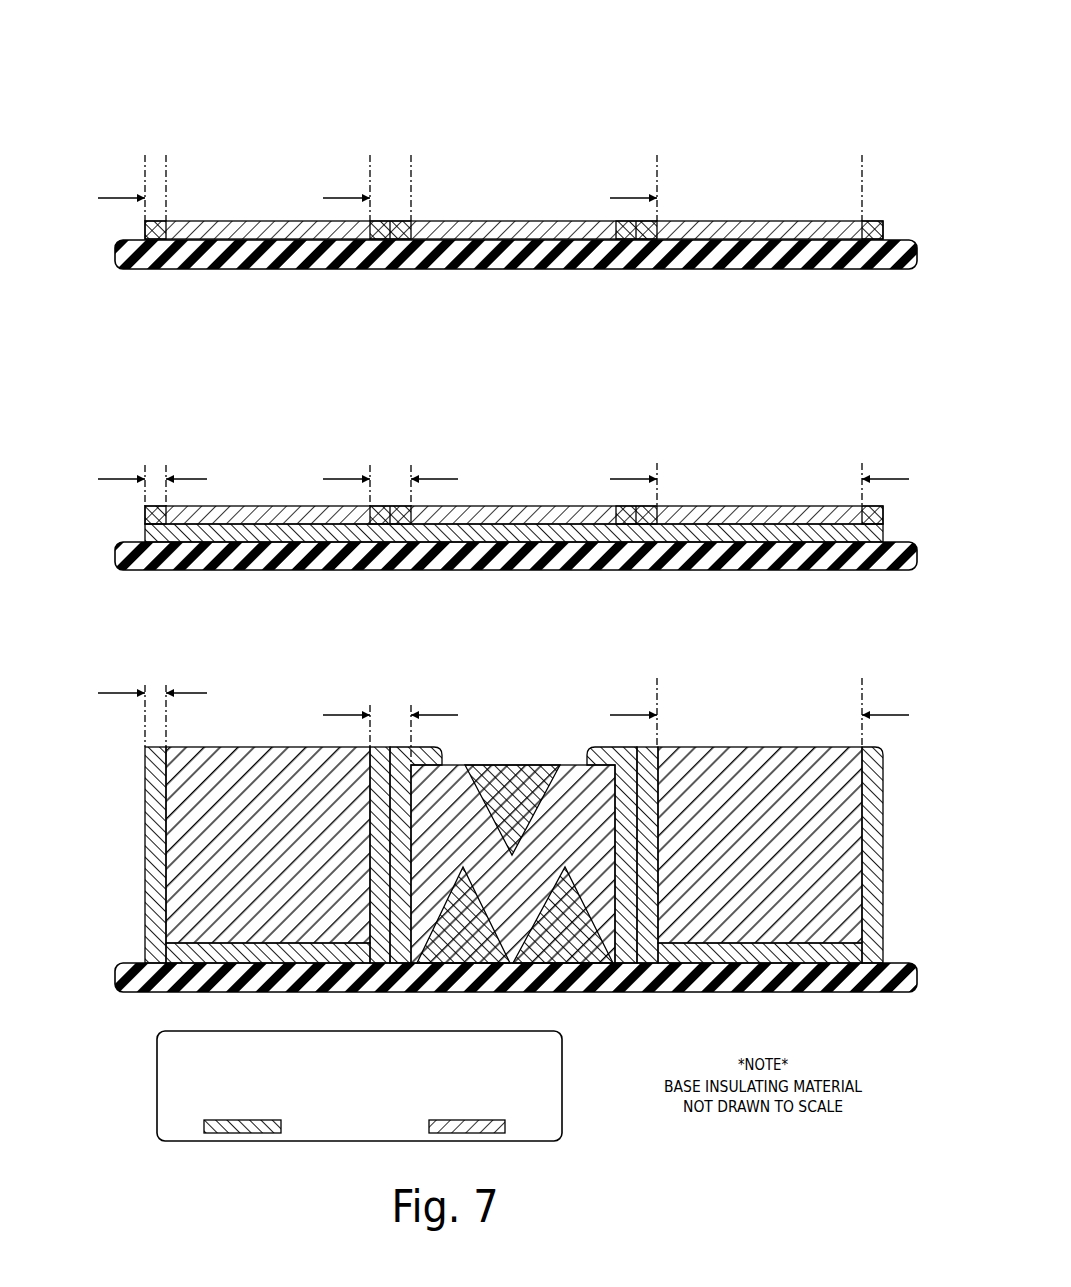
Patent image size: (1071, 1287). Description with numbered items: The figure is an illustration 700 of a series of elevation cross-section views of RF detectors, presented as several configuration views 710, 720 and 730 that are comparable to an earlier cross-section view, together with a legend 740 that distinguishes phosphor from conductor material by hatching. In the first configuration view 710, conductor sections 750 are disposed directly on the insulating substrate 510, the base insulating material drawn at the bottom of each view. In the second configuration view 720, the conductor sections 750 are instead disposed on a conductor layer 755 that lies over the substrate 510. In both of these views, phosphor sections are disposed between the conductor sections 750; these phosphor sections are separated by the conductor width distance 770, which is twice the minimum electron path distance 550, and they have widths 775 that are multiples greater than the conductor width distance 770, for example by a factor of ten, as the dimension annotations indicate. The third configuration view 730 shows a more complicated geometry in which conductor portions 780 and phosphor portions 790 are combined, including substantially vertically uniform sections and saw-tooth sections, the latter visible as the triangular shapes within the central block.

The illustration 700 is at (838, 68).
The first configuration view 710 is at (95, 78).
The second configuration view 720 is at (95, 377).
The third configuration view 730 is at (95, 620).
The legend 740 is at (152, 1095).
The insulating substrate 510 is at (234, 270).
The minimum electron path distance 550 is at (166, 198).
The conductor sections 750 is at (620, 221).
The conductor layer 755 is at (883, 527).
The conductor width distance 770 is at (411, 198).
The widths 775 is at (909, 198).
The conductor portions 780 is at (145, 932).
The phosphor portions 790 is at (282, 747).